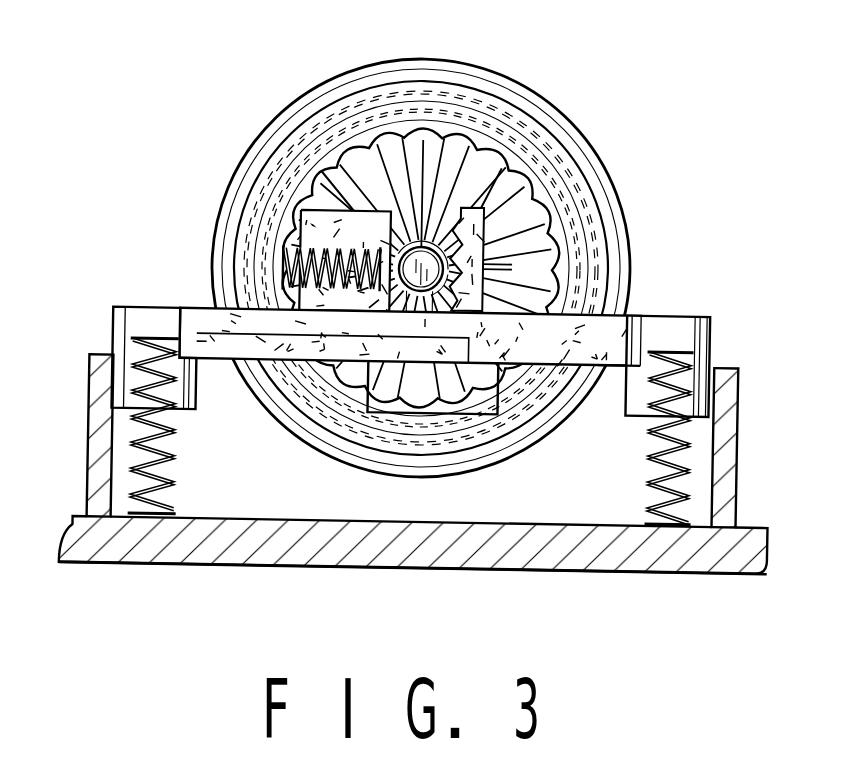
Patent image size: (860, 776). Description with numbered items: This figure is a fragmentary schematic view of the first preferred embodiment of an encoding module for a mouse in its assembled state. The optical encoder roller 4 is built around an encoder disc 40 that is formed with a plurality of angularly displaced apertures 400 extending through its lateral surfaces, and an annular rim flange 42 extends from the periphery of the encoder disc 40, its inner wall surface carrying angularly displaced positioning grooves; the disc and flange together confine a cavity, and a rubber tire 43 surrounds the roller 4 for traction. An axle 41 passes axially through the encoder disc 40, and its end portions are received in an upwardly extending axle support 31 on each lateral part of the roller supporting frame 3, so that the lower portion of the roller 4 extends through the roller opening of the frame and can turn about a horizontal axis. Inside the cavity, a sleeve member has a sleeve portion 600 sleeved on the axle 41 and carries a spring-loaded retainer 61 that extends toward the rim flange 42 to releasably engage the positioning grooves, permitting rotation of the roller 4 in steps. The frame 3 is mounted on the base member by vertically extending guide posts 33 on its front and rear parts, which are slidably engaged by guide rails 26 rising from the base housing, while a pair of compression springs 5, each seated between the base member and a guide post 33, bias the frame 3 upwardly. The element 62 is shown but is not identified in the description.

The roller supporting frame 3 is at (673, 317).
The optical encoder roller 4 is at (240, 148).
The compression springs 5 is at (170, 490).
The guide rails 26 is at (92, 416).
The axle support 31 is at (508, 290).
The guide posts 33 is at (143, 312).
The encoder disc 40 is at (555, 125).
The axle 41 is at (432, 120).
The annular rim flange 42 is at (550, 210).
The rubber tire 43 is at (593, 177).
The spring-loaded retainer 61 is at (282, 267).
The sliding plate 62 is at (445, 369).
The apertures 400 is at (397, 244).
The sleeve portion 600 is at (498, 172).